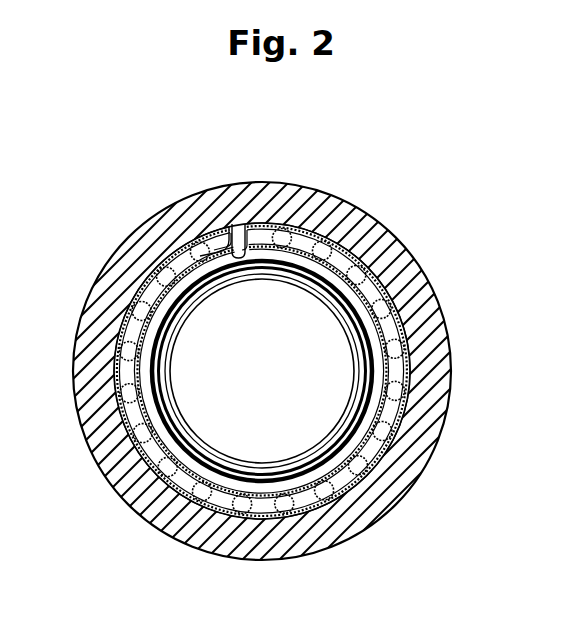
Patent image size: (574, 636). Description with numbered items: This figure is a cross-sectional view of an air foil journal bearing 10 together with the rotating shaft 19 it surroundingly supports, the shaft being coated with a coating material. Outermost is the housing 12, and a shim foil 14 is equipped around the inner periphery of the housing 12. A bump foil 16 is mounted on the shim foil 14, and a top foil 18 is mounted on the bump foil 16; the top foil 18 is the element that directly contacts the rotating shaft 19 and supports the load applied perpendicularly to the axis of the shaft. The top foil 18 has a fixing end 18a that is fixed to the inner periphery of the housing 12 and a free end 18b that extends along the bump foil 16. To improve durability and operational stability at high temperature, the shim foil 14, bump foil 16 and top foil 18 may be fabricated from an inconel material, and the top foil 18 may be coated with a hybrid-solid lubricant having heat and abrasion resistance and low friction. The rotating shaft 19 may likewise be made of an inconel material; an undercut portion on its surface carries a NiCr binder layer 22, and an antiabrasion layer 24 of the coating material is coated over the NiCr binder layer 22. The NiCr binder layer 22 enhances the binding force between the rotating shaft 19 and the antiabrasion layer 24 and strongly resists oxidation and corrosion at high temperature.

The air foil journal bearing 10 is at (357, 163).
The housing 12 is at (430, 408).
The shim foil 14 is at (392, 348).
The bump foil 16 is at (395, 462).
The top foil 18 is at (292, 493).
The fixing end 18a is at (236, 250).
The free end 18b is at (212, 243).
The rotating shaft 19 is at (210, 342).
The NiCr binder layer 22 is at (372, 265).
The antiabrasion layer 24 is at (370, 306).